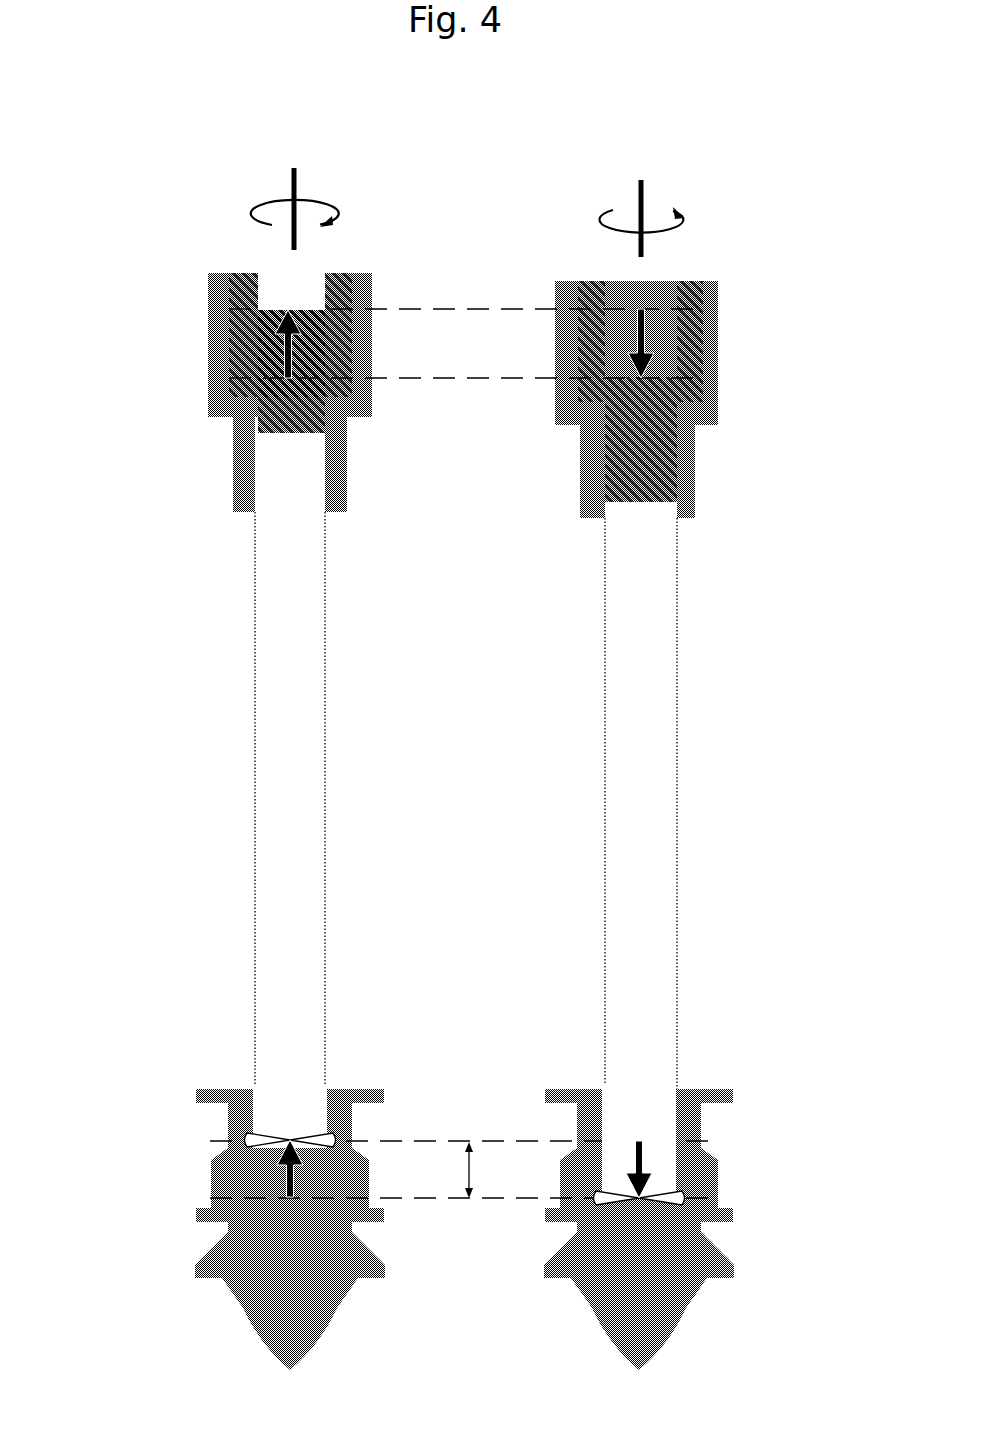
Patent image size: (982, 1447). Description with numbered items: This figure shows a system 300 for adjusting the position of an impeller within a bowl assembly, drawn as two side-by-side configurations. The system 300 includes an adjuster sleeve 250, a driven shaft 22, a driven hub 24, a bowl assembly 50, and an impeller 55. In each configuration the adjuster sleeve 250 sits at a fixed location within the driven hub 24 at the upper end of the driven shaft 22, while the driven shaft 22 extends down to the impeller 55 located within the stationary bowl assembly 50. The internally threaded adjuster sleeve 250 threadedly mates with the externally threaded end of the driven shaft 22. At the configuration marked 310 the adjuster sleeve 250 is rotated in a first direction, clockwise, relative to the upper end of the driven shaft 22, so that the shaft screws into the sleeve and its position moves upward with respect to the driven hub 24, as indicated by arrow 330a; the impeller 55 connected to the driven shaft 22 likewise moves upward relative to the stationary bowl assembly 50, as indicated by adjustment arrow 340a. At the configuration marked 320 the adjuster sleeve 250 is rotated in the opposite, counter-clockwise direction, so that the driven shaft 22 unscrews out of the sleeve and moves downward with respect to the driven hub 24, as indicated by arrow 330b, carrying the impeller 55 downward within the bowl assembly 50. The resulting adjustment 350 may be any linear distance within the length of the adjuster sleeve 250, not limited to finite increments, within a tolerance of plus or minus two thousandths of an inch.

The system 300 is at (470, 73).
The clockwise rotation configuration 310 is at (190, 163).
The counter-clockwise rotation configuration 320 is at (535, 165).
The adjuster sleeve 250 is at (237, 322).
The arrow 330a is at (288, 357).
The arrow 330b is at (641, 337).
The driven hub 24 is at (245, 463).
The driven shaft 22 is at (270, 828).
The impeller 55 is at (243, 1132).
The adjustment arrow 340a is at (289, 1177).
The adjustment 350 is at (469, 1172).
The bowl assembly 50 is at (296, 1243).